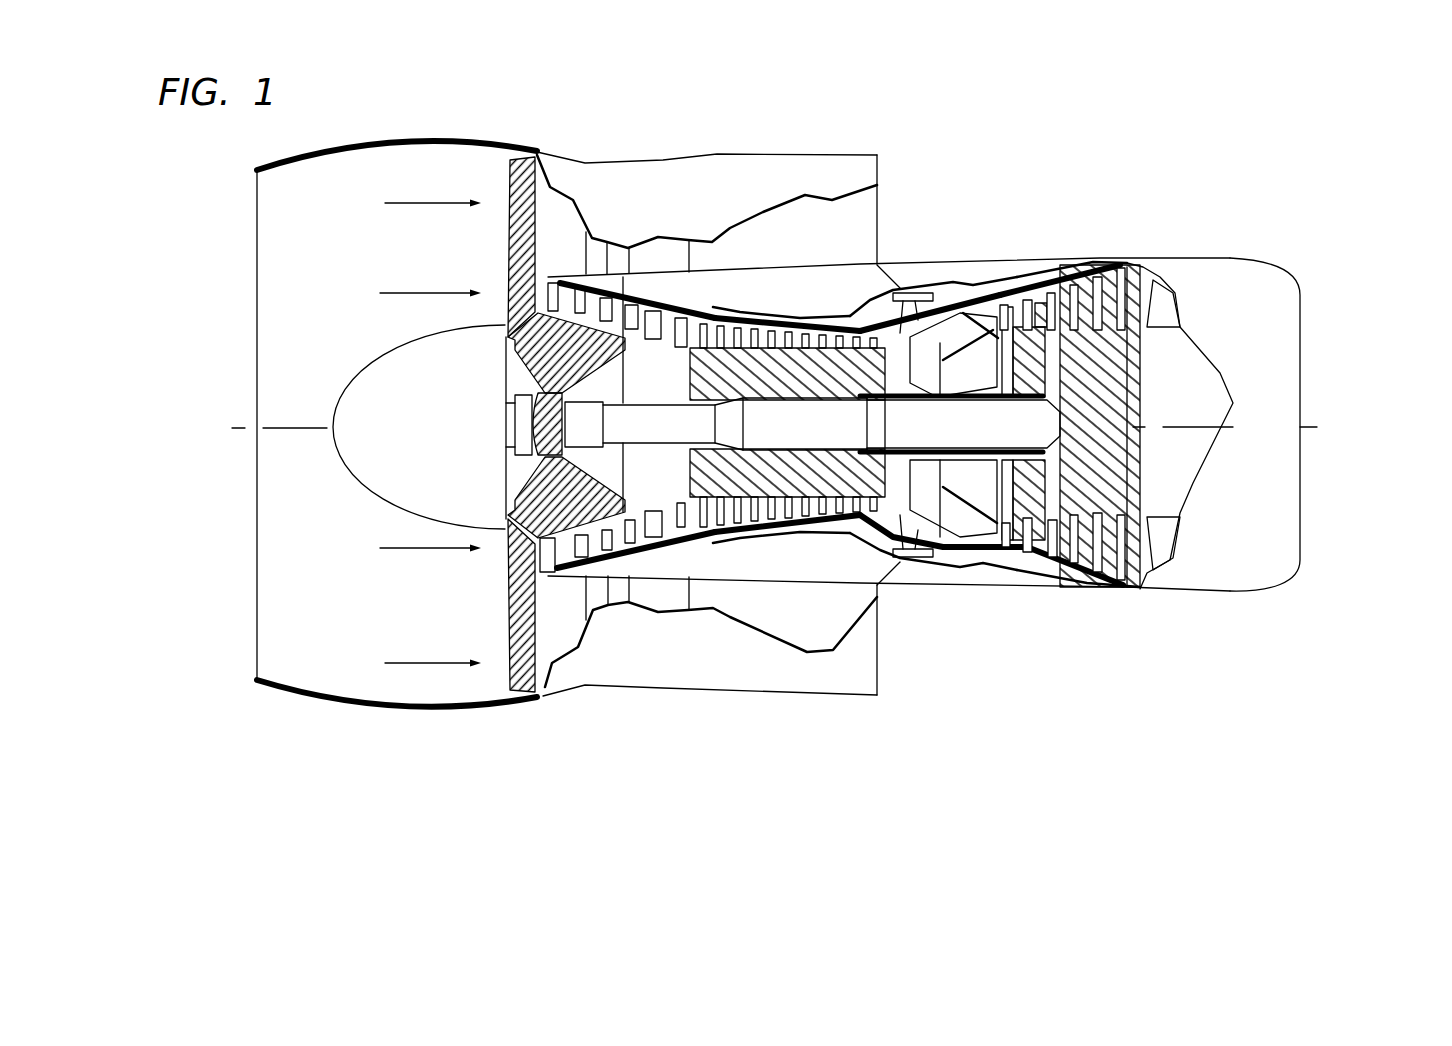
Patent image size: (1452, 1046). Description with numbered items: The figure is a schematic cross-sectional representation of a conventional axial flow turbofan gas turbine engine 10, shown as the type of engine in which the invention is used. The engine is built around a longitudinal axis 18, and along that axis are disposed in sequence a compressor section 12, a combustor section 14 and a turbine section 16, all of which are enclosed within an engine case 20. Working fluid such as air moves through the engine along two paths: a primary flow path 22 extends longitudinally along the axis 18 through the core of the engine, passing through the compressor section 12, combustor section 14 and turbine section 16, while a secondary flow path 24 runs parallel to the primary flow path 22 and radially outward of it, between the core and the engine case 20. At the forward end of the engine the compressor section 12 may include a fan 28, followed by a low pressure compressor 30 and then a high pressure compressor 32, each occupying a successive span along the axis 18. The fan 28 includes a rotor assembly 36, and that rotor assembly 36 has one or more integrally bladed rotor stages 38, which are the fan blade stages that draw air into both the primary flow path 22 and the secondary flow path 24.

The gas turbine engine 10 is at (1220, 160).
The compressor section 12 is at (877, 805).
The combustor section 14 is at (998, 680).
The turbine section 16 is at (1138, 680).
The longitudinal axis 18 is at (213, 428).
The engine case 20 is at (1280, 270).
The primary flow path 22 is at (406, 420).
The secondary flow path 24 is at (408, 431).
The fan 28 is at (508, 717).
The low pressure compressor 30 is at (625, 700).
The high pressure compressor 32 is at (877, 703).
The rotor assembly 36 is at (544, 553).
The integrally bladed rotor stage 38 is at (507, 583).